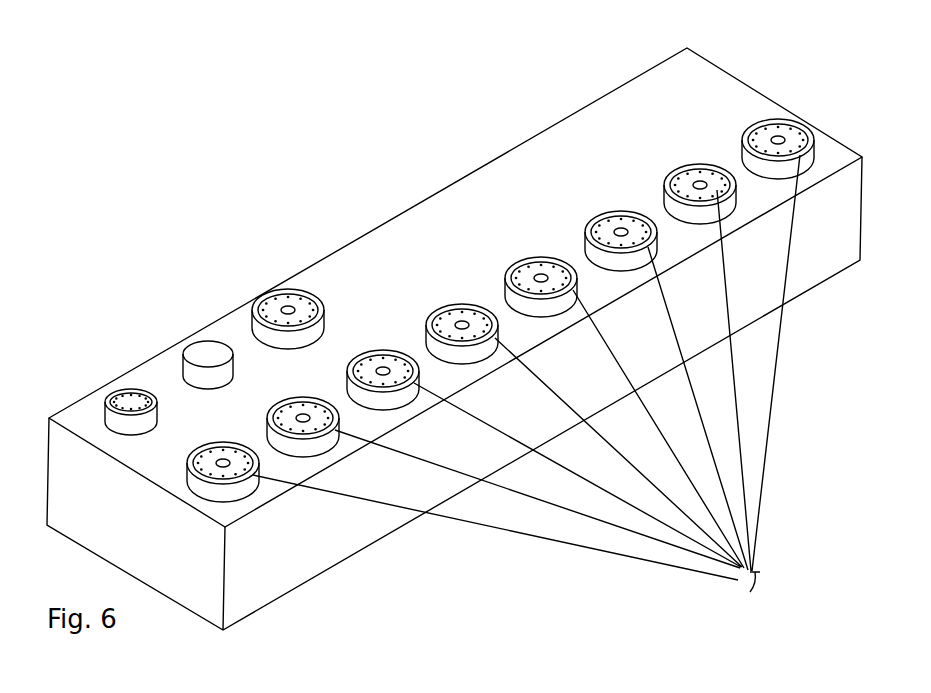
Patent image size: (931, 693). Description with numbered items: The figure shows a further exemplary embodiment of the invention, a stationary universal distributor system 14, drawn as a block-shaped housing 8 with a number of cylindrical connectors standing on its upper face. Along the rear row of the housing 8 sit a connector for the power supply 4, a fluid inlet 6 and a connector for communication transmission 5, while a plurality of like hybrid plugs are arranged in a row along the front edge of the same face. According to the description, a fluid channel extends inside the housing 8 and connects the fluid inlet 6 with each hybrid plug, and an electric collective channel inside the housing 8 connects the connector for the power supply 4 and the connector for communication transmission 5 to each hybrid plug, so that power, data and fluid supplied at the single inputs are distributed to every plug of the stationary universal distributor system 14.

The stationary universal distributor system 14 is at (170, 92).
The housing 8 is at (546, 162).
The connector for the power supply 4 is at (281, 308).
The connector for communication transmission 5 is at (125, 395).
The fluid inlet 6 is at (203, 352).